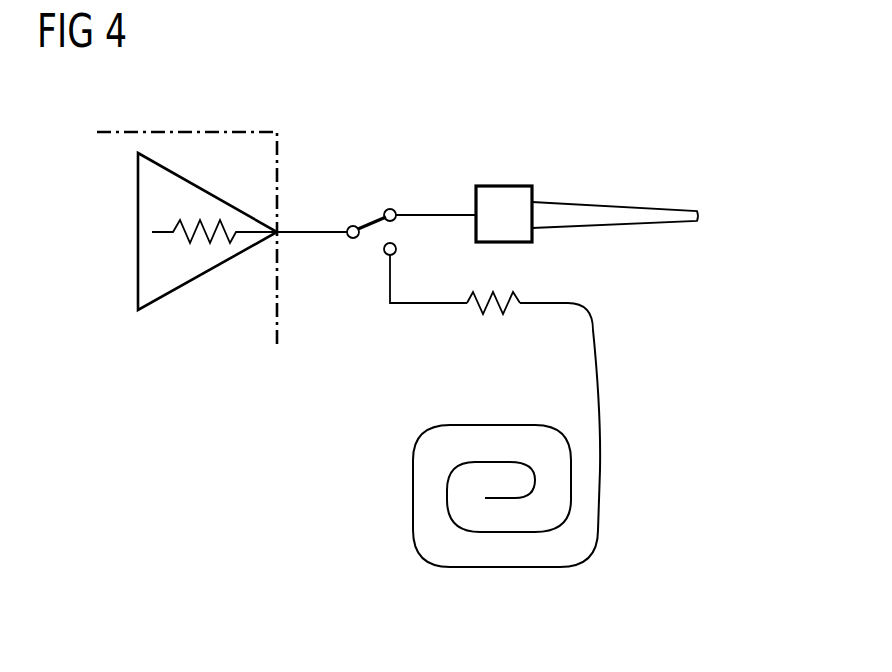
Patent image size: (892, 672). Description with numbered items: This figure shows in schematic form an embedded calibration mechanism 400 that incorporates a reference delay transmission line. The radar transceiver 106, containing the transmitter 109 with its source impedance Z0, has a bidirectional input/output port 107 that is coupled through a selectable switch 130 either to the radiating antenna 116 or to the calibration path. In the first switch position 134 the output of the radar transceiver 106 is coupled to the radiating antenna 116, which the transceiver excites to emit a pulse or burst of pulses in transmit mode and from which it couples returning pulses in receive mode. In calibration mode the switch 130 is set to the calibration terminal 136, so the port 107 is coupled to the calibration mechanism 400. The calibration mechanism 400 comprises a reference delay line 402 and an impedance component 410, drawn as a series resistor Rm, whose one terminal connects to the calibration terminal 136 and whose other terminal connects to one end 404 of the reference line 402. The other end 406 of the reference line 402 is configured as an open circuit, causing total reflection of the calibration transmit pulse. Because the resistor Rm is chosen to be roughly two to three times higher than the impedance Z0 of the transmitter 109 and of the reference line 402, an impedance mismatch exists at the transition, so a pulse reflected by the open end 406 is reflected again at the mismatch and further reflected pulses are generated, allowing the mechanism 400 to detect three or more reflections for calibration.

The radar transceiver 106 is at (197, 132).
The transmitter 109 is at (137, 187).
The impedance of the transmitter Z0 is at (207, 240).
The bidirectional input/output port 107 is at (311, 228).
The selectable switch 130 is at (378, 232).
The first switch position 134 is at (390, 207).
The calibration terminal 136 is at (383, 253).
The radiating antenna 116 is at (497, 185).
The impedance component 410 is at (502, 317).
The end of the reference line 404 is at (553, 303).
The reference delay line 402 is at (602, 425).
The open circuit end 406 is at (500, 500).
The calibration mechanism 400 is at (641, 368).